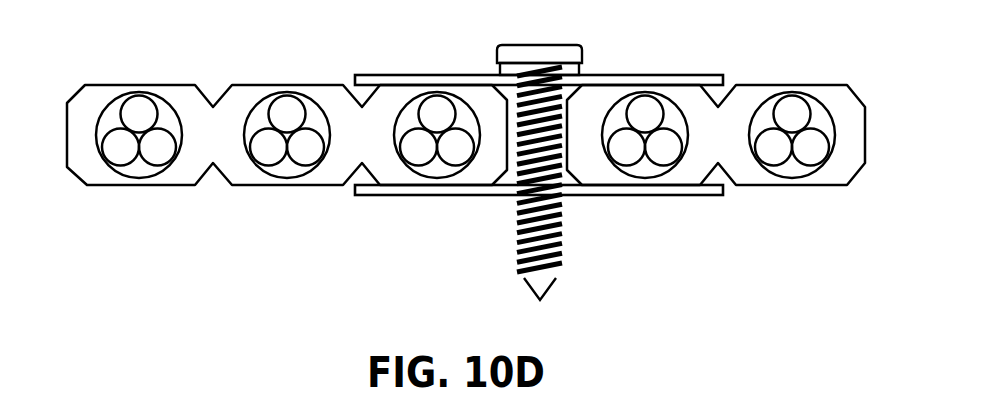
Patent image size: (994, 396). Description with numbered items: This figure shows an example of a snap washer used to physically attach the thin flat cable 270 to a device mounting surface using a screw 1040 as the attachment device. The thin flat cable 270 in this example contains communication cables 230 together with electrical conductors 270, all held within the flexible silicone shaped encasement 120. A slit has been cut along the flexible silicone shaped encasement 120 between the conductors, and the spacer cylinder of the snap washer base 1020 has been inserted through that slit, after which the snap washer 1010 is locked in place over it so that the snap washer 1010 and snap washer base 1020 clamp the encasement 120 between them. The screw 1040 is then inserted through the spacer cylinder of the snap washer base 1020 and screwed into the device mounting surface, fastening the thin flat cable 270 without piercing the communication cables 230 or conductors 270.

The flexible silicone shaped encasement 120 is at (235, 173).
The thin flat cable 270 is at (400, 126).
The communication cables 230 is at (672, 117).
The snap washer 1010 is at (710, 80).
The snap washer base 1020 is at (682, 190).
The screw 1040 is at (550, 58).